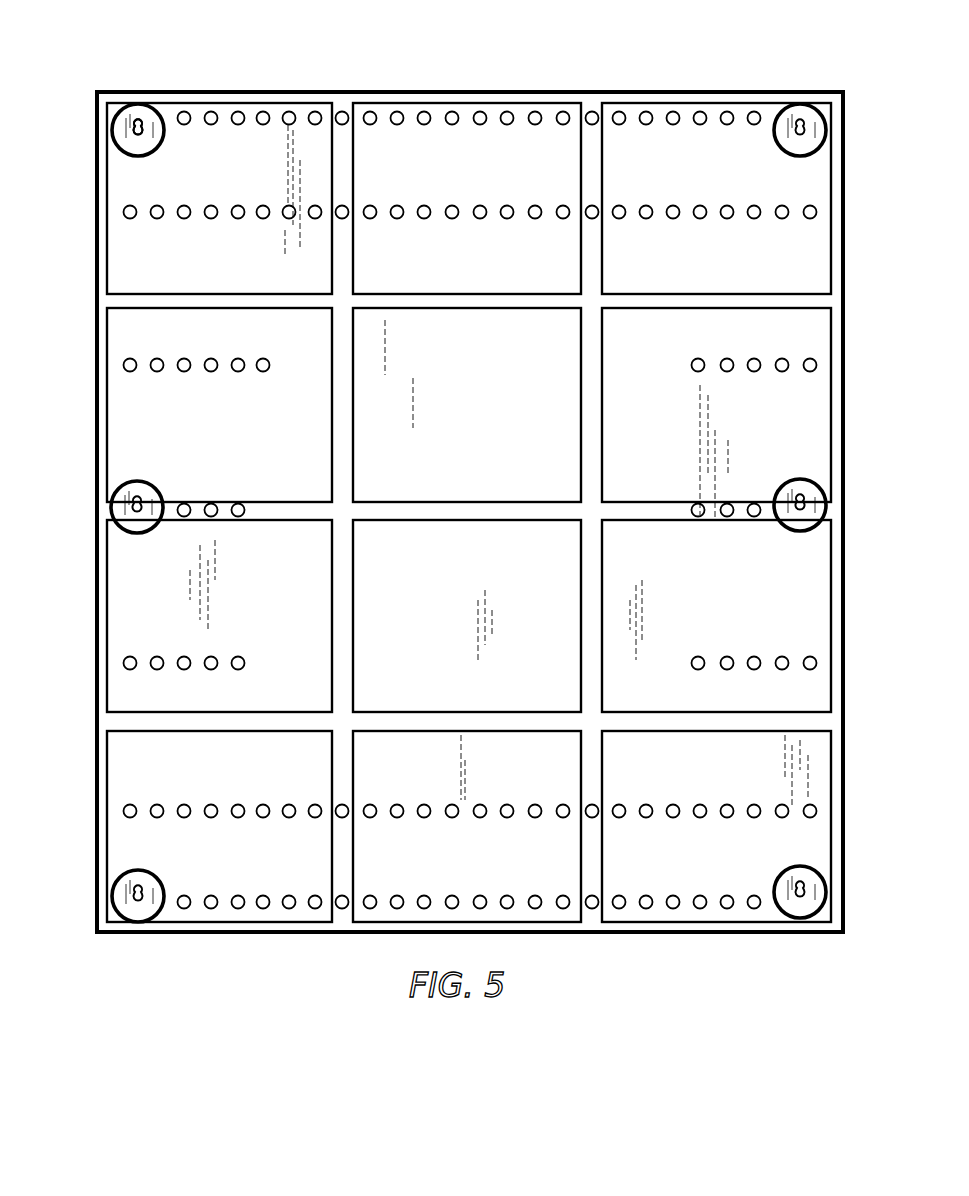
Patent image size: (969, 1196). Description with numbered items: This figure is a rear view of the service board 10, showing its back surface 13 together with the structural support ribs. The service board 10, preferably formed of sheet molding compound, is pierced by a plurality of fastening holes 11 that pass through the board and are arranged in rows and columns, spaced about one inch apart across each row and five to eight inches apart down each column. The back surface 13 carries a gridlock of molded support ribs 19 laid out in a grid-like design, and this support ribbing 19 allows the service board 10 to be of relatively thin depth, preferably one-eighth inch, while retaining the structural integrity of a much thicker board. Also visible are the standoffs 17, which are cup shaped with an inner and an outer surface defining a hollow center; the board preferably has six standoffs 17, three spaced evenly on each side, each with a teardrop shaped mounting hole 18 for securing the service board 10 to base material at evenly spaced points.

The service board 10 is at (561, 82).
The fastening holes 11 is at (453, 111).
The back surface 13 is at (777, 422).
The standoffs 17 is at (158, 118).
The teardrop shaped mounting hole 18 is at (127, 128).
The support ribs 19 is at (142, 303).